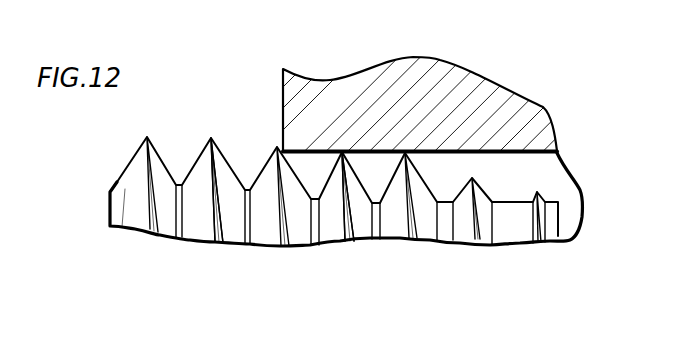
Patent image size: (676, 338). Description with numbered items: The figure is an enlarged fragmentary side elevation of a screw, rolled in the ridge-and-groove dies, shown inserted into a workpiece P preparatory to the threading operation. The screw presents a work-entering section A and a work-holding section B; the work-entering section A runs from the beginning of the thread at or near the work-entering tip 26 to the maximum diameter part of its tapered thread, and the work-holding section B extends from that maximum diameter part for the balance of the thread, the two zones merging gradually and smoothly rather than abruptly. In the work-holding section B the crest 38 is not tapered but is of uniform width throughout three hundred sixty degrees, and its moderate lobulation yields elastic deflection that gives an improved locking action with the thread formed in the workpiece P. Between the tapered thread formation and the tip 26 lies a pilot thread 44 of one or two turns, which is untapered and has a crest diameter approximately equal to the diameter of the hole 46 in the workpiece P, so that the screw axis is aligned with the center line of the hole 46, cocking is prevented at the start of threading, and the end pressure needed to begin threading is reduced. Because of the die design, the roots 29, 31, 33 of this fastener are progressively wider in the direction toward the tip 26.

The work-entering tip 26 is at (552, 207).
The workpiece P is at (472, 90).
The hole in the workpiece 46 is at (510, 163).
The root 31 is at (313, 198).
The root 29 is at (373, 200).
The root 33 is at (247, 187).
The work-holding section B is at (115, 210).
The crest 38 is at (217, 218).
The work-entering section A is at (363, 247).
The pilot thread 44 is at (427, 222).